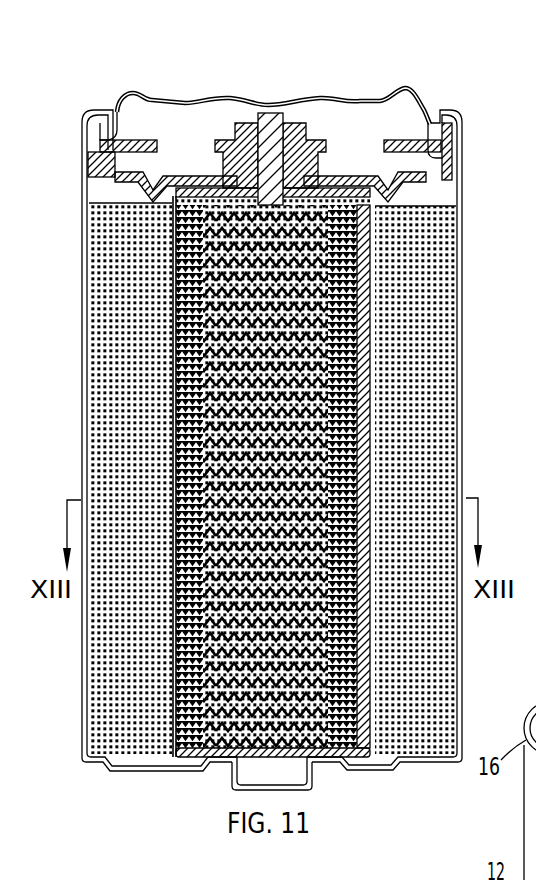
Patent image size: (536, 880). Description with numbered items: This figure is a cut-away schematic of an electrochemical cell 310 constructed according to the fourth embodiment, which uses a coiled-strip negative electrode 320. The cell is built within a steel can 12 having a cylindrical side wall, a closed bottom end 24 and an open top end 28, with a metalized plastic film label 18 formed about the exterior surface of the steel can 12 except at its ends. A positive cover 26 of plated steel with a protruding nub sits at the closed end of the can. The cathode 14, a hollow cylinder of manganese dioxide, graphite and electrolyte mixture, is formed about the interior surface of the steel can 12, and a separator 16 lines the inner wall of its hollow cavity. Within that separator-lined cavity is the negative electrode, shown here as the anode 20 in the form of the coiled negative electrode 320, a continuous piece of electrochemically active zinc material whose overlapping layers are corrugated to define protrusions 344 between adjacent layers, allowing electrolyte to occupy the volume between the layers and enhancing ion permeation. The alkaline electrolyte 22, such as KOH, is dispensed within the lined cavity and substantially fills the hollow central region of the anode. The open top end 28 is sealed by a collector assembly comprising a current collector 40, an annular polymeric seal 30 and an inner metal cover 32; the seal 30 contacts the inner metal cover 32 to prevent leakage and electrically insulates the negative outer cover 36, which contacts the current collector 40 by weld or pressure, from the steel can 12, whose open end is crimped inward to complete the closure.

The steel can 12 is at (83, 438).
The cathode 14 is at (110, 414).
The separator 16 is at (174, 352).
The label 18 is at (83, 474).
The negative electrode 20 is at (176, 296).
The alkaline electrolyte 22 is at (173, 236).
The closed bottom end 24 is at (270, 757).
The positive cover 26 is at (300, 790).
The open top end 28 is at (404, 116).
The annular polymeric seal 30 is at (237, 123).
The inner metal cover 32 is at (126, 100).
The negative outer cover 36 is at (171, 97).
The current collector 40 is at (269, 113).
The electrochemical cell 310 is at (422, 60).
The negative electrode 320 is at (386, 448).
The protrusions 344 is at (352, 688).